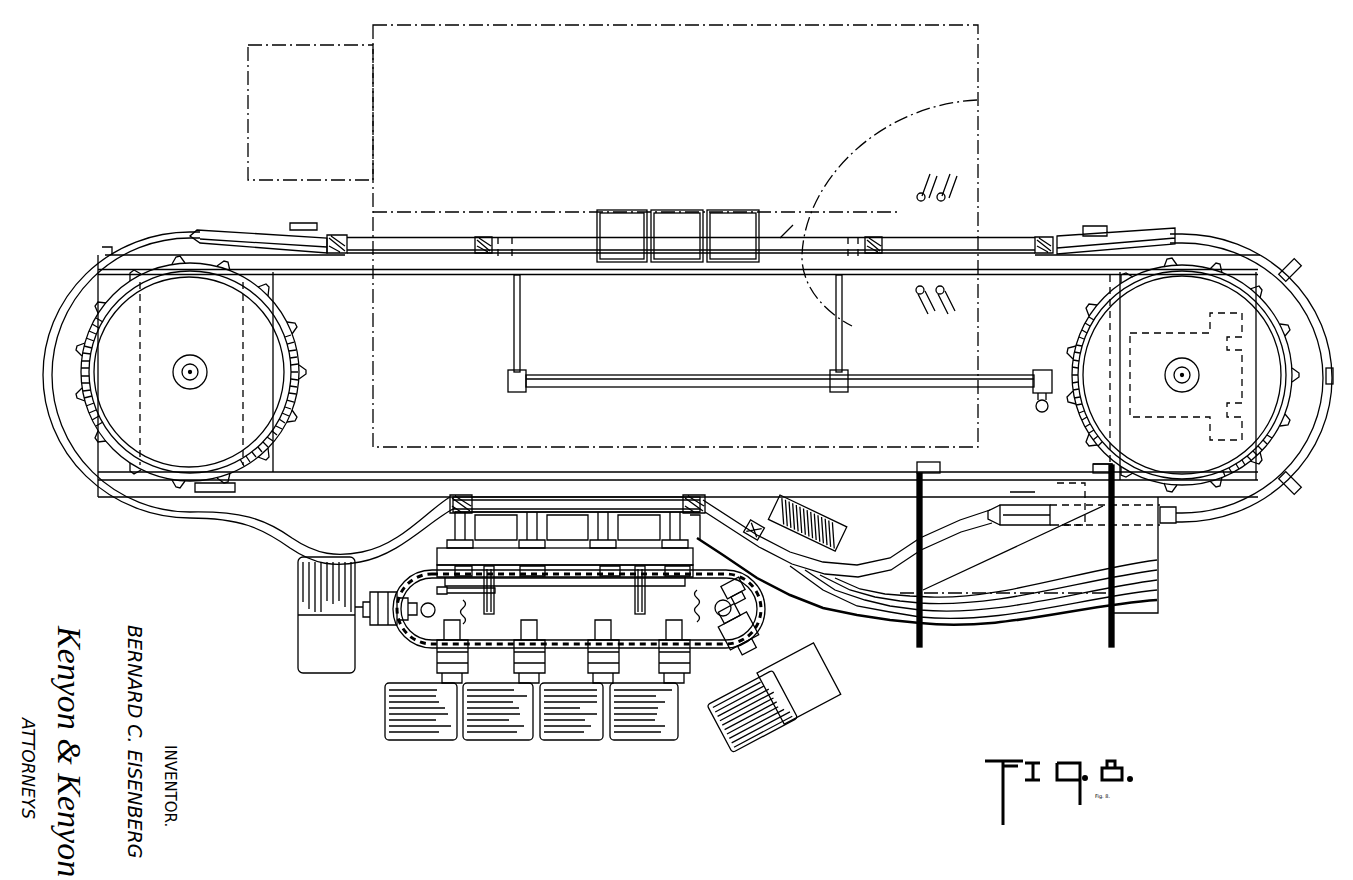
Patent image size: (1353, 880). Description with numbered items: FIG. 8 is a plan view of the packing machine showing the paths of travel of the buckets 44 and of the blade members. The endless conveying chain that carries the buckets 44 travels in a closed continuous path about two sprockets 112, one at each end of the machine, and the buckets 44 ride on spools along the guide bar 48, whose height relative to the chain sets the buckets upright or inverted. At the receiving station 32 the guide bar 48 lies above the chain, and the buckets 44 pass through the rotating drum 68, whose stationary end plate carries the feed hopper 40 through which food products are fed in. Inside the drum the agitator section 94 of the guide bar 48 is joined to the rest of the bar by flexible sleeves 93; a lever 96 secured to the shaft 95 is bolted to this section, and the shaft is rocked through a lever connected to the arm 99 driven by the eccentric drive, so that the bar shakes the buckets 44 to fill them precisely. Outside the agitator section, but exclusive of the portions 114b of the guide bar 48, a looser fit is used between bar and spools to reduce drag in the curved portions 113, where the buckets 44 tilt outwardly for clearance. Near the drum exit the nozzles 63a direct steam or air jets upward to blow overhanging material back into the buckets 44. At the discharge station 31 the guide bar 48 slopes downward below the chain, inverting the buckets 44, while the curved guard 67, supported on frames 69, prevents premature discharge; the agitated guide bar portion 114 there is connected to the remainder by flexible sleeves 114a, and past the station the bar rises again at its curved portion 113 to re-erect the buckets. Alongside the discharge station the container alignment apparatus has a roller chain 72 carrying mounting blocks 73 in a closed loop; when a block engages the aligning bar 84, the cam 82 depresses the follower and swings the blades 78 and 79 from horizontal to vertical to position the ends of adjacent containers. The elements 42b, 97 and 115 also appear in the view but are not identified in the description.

The feed hopper 40 is at (248, 102).
The operating zone boundary 42b is at (873, 148).
The rotating drum 68 is at (965, 130).
The nozzles 63a is at (922, 180).
The receiving station 32 is at (676, 206).
The buckets 44 is at (722, 220).
The agitator section 94 is at (778, 242).
The flexible sleeves 93 is at (481, 238).
The guide bar 48 is at (1002, 246).
The portions of guide bar 114b is at (210, 232).
The curved portions of guide bar 113 is at (90, 290).
The sprockets 112 is at (135, 438).
The lever 96 is at (521, 325).
The shaft 95 is at (685, 380).
The bracket 97 is at (518, 390).
The arm 99 is at (1036, 412).
The flexible sleeves 114a is at (465, 495).
The guide bar portion 114 is at (590, 496).
The discharge station 31 is at (662, 490).
The drive chain 115 is at (424, 587).
The aligning bar 84 is at (530, 565).
The cam 82 is at (593, 575).
The roller chain 72 is at (408, 636).
The mounting blocks 73 is at (466, 654).
The blade 79 is at (425, 738).
The blade 78 is at (805, 700).
The frame 69 is at (912, 610).
The guard 67 is at (1000, 605).